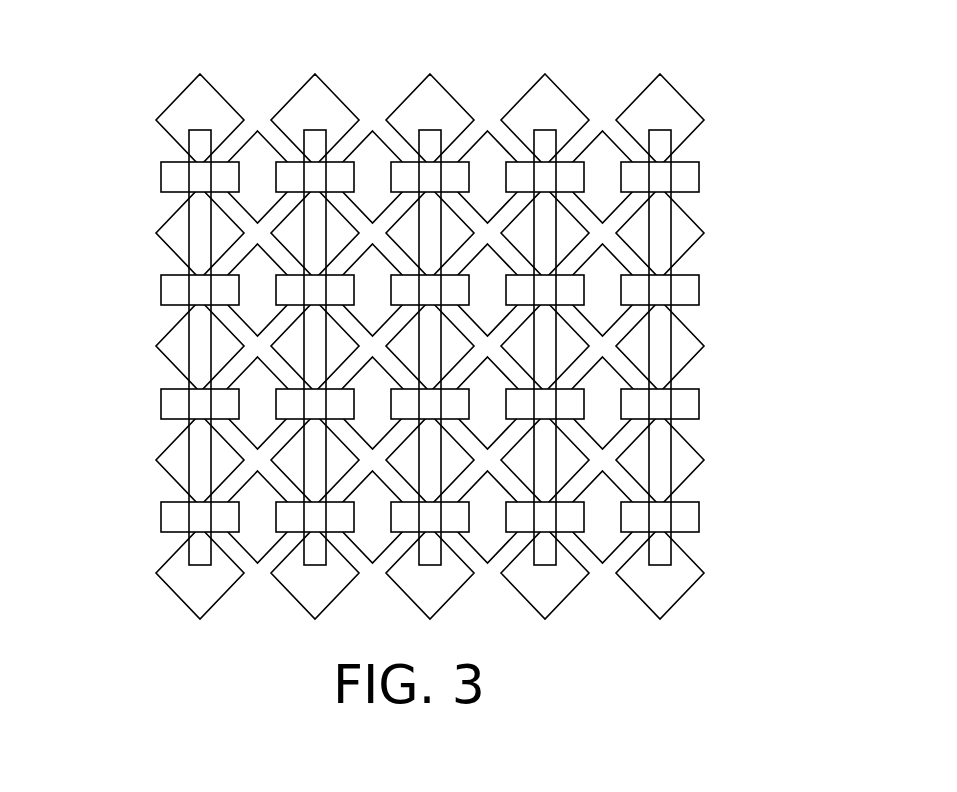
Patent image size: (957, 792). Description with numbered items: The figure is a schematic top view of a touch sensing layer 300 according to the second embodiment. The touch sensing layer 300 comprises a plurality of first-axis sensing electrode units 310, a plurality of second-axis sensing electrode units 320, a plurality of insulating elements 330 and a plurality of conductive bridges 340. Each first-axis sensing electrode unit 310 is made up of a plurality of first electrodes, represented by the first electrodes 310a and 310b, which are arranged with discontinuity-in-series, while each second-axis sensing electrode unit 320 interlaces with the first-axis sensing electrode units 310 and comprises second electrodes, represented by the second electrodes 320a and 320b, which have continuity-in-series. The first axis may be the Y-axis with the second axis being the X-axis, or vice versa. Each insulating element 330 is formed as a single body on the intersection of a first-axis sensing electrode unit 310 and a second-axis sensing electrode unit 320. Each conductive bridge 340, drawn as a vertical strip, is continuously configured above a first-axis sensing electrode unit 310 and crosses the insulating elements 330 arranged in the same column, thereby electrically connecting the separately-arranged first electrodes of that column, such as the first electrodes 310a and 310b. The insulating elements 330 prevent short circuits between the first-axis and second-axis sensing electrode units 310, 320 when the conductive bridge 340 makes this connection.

The touch sensing layer 300 is at (815, 88).
The first-axis sensing electrode unit 310 is at (662, 593).
The first electrode 310a is at (540, 98).
The first electrode 310b is at (568, 238).
The second-axis sensing electrode unit 320 is at (260, 153).
The second electrode 320a is at (499, 145).
The second electrode 320b is at (622, 148).
The insulating element 330 is at (705, 170).
The conductive bridge 340 is at (200, 145).